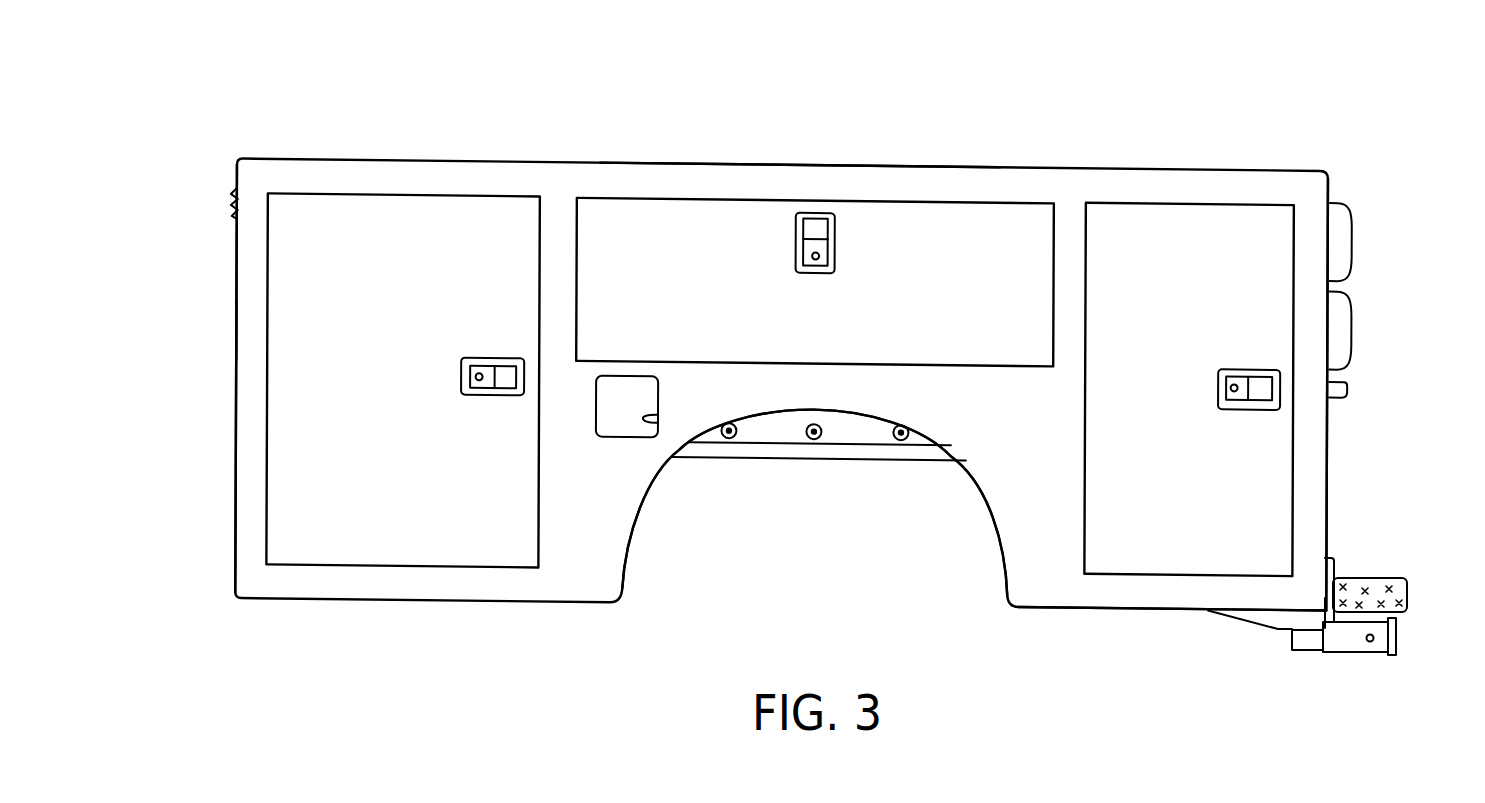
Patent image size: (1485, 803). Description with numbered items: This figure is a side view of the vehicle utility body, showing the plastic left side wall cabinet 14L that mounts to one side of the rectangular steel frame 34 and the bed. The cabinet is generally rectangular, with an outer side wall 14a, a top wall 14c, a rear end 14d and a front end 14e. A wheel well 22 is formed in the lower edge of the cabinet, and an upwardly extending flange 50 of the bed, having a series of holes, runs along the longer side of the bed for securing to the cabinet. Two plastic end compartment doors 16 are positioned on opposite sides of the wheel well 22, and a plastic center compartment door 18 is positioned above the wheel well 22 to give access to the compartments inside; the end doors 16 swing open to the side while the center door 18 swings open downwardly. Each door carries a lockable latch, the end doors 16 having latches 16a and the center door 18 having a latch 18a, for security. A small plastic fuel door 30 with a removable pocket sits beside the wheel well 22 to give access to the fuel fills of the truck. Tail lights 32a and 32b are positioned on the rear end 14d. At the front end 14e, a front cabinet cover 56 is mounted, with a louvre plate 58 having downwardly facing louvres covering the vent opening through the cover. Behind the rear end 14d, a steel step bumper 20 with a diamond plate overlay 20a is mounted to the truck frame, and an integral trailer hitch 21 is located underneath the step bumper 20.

The outer side wall 14a is at (1041, 584).
The top wall 14c is at (995, 160).
The rear end 14d is at (1342, 470).
The front end 14e is at (235, 400).
The left side wall cabinet 14L is at (792, 165).
The end compartment door 16 is at (386, 418).
The lockable latch 16a is at (486, 365).
The center compartment door 18 is at (901, 321).
The lockable latch 18a is at (835, 241).
The step bumper 20 is at (1396, 574).
The diamond plate overlay 20a is at (1352, 580).
The trailer hitch 21 is at (1380, 638).
The wheel well 22 is at (656, 487).
The fuel door 30 is at (611, 424).
The tail light 32a is at (1352, 241).
The tail light 32b is at (1352, 327).
The steel frame 34 is at (764, 452).
The flange 50 is at (851, 430).
The front cabinet cover 56 is at (235, 331).
The louvre plate 58 is at (235, 203).